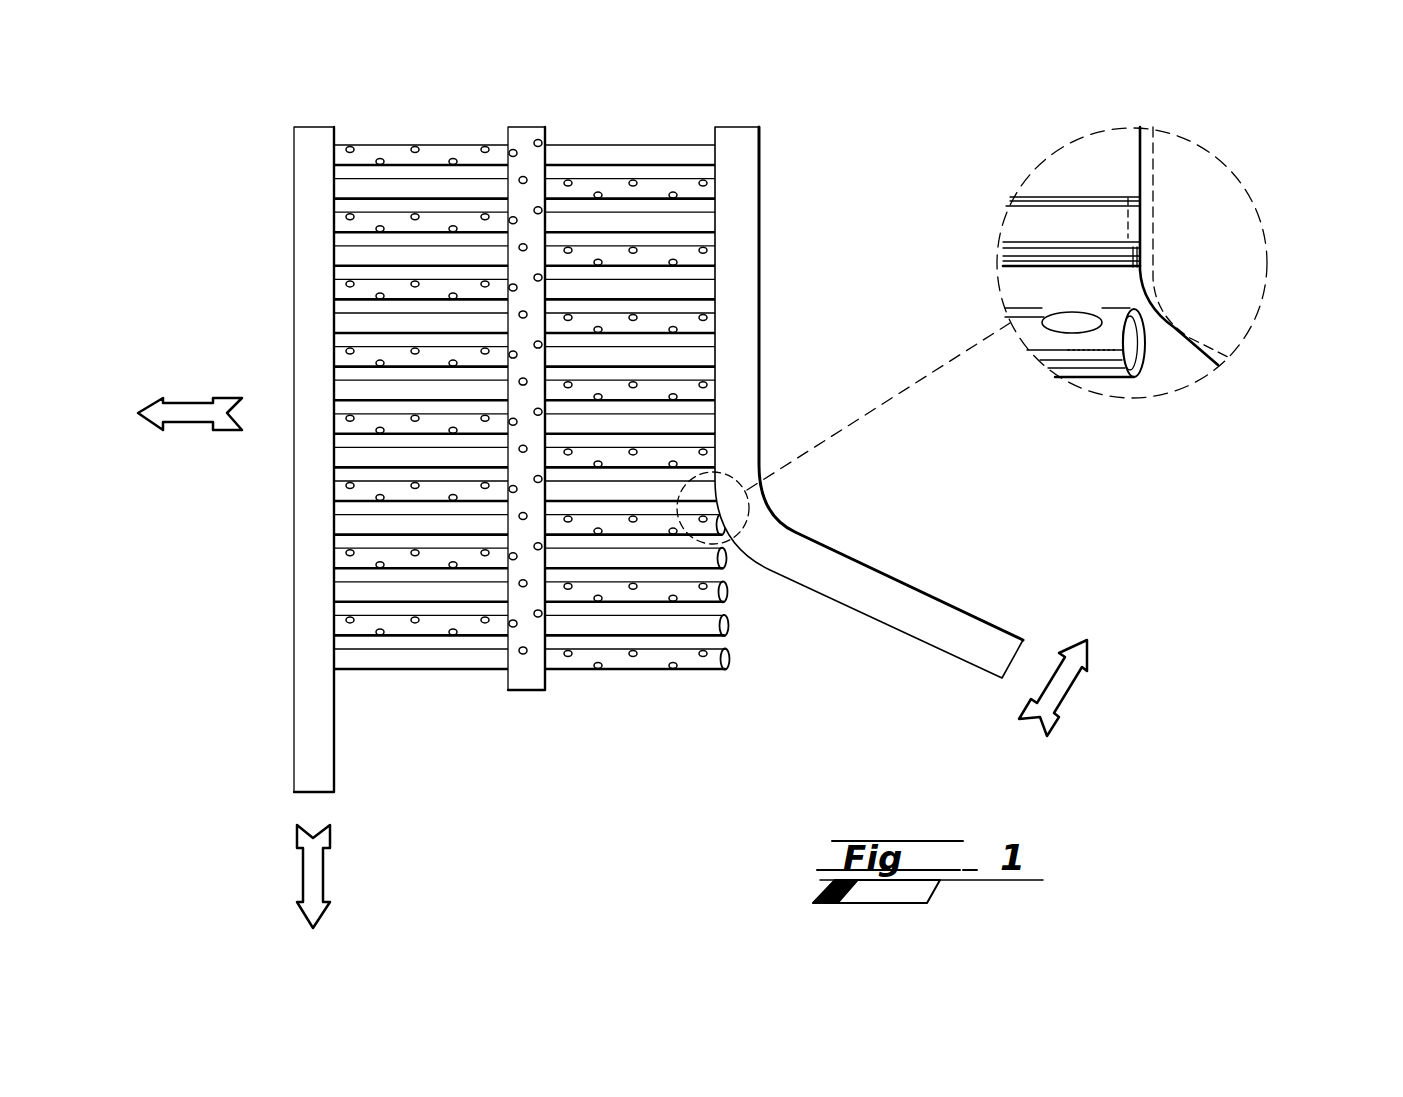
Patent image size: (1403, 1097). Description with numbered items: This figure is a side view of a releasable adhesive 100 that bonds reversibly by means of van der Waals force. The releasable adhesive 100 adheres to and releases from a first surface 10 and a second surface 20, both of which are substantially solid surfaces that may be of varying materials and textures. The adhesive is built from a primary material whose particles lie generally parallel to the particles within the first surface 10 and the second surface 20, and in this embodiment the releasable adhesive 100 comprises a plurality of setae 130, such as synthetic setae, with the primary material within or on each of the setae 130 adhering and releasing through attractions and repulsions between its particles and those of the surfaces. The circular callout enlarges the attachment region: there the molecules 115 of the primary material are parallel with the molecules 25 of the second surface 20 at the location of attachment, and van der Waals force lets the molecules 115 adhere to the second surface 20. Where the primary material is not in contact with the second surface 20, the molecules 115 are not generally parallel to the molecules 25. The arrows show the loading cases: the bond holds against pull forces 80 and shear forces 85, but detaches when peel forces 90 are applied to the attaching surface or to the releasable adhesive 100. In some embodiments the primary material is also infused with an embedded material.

The releasable adhesive 100 is at (754, 498).
The first surface 10 is at (305, 562).
The second surface 20 is at (760, 268).
The molecules of the second surface 25 is at (1158, 172).
The pull forces 80 is at (193, 424).
The shear forces 85 is at (325, 868).
The peel forces 90 is at (1077, 687).
The molecules of the primary material 115 is at (1130, 215).
The setae 130 is at (641, 150).